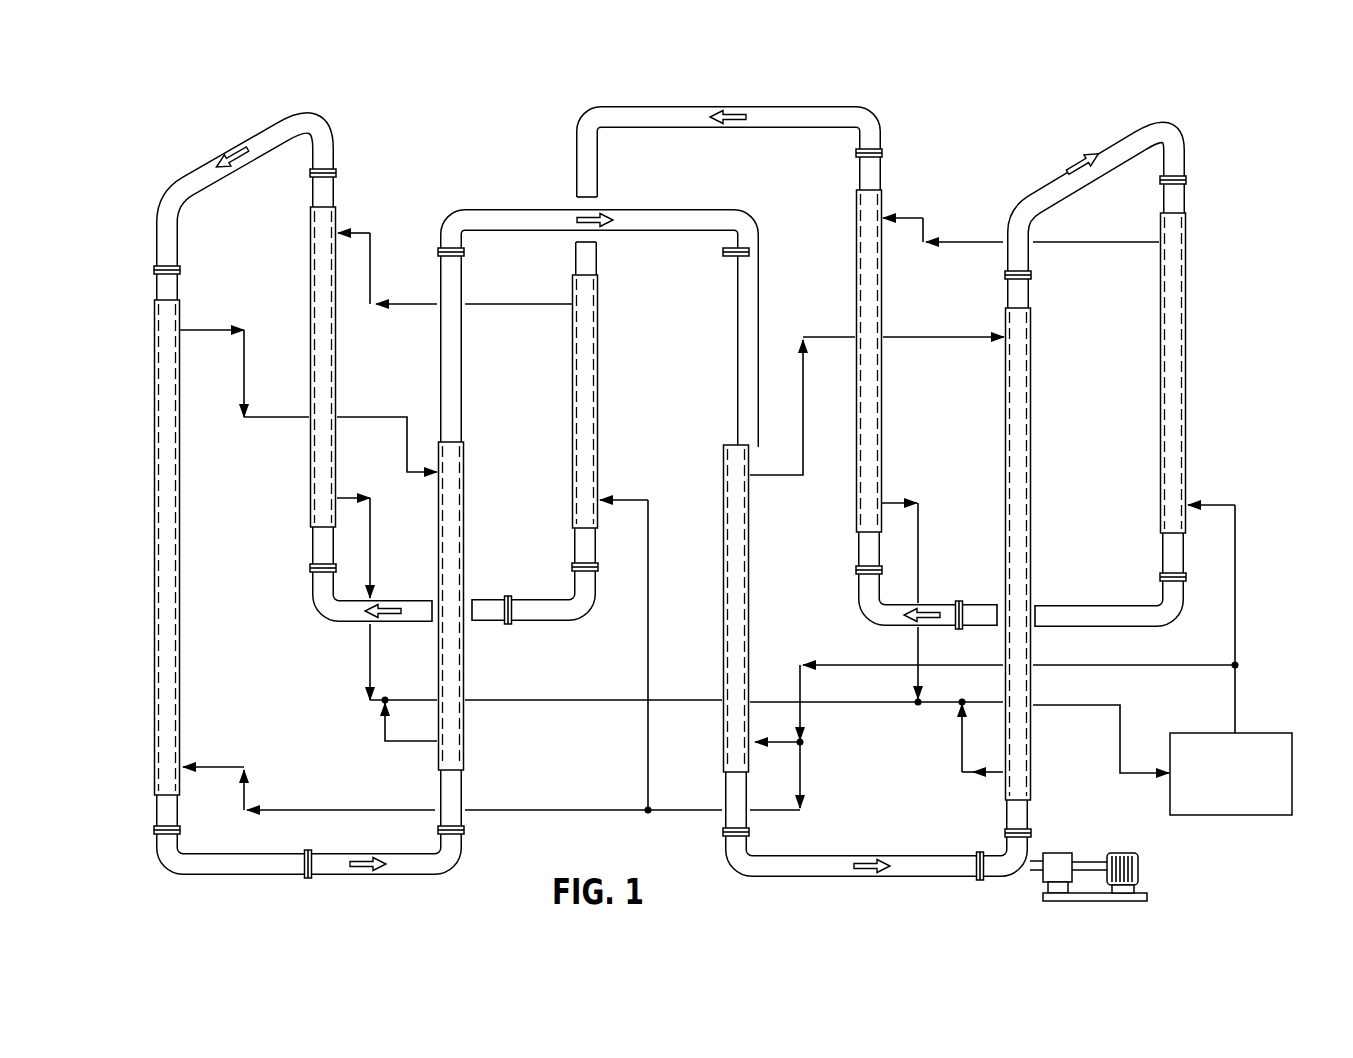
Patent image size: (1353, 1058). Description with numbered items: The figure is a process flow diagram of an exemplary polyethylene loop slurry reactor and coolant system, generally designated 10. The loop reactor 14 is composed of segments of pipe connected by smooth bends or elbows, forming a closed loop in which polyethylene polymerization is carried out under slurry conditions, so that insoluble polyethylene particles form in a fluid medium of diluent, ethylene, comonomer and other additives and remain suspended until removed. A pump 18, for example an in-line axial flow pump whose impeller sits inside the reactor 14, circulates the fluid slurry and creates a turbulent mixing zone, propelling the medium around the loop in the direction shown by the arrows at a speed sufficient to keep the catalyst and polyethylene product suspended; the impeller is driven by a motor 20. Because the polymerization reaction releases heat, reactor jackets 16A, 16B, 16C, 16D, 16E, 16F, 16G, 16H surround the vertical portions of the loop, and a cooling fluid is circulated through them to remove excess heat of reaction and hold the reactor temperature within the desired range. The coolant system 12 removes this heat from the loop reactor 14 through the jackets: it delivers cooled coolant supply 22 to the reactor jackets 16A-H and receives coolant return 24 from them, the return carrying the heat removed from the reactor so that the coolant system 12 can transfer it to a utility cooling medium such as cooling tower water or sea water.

The polyethylene loop slurry reactor and coolant system 10 is at (984, 141).
The coolant system 12 is at (1226, 816).
The loop reactor 14 is at (1182, 150).
The reactor jacket 16A is at (182, 572).
The reactor jacket 16B is at (337, 386).
The reactor jacket 16C is at (466, 533).
The reactor jacket 16D is at (599, 403).
The reactor jacket 16E is at (750, 620).
The reactor jacket 16F is at (883, 437).
The reactor jacket 16G is at (1033, 532).
The reactor jacket 16H is at (1188, 388).
The pump 18 is at (1054, 853).
The motor 20 is at (1138, 868).
The coolant supply 22 is at (1237, 643).
The coolant return 24 is at (1122, 745).